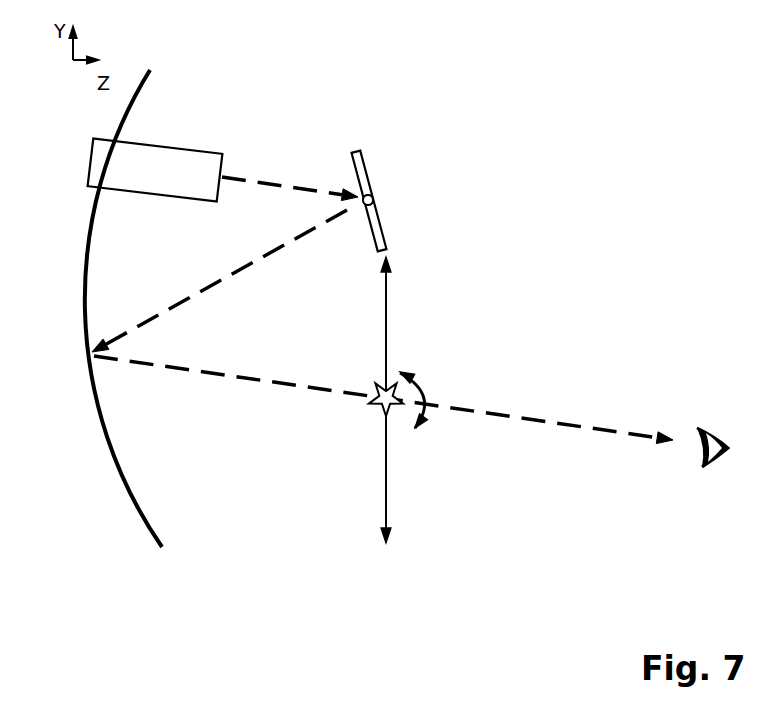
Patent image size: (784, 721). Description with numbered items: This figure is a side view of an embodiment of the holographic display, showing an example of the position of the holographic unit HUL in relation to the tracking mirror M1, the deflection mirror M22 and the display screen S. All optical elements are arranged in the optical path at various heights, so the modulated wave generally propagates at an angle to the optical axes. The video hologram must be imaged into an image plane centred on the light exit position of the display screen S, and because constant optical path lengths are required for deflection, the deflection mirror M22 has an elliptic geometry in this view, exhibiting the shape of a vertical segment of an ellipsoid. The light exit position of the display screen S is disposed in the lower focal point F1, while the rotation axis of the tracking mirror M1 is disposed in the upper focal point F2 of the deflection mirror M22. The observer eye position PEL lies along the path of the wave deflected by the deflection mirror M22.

The deflection mirror M22 is at (95, 308).
The holographic unit HUL is at (155, 169).
The tracking mirror M1 is at (394, 201).
The upper focal point F2 is at (355, 226).
The display screen S is at (403, 400).
The lower focal point F1 is at (383, 414).
The eye position PEL is at (699, 427).